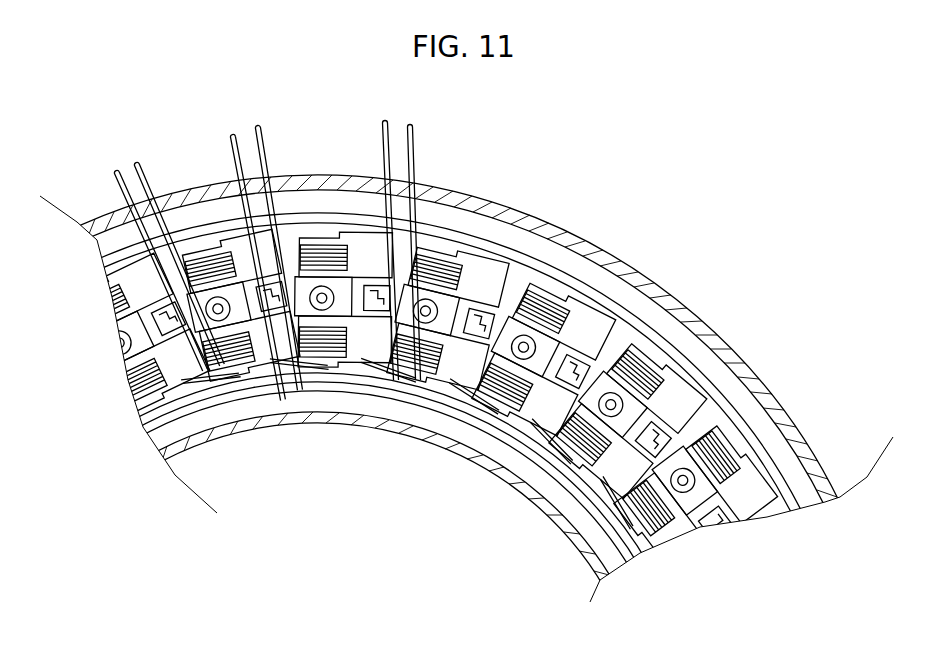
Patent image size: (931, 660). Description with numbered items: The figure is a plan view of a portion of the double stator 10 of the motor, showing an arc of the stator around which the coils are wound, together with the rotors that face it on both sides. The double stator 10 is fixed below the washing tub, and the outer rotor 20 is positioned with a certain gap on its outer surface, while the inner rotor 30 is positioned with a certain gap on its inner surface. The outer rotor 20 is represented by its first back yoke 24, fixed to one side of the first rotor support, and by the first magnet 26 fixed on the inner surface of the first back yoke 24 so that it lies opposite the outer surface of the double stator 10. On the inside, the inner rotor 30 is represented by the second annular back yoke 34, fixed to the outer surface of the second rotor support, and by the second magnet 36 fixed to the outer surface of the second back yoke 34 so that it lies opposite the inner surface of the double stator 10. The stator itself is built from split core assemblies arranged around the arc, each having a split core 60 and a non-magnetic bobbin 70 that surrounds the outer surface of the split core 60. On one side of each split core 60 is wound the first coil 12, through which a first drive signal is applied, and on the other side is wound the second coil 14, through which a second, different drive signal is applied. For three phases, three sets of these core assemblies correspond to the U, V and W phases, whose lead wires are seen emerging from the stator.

The double stator 10 is at (447, 348).
The first coil 12 is at (228, 215).
The second coil 14 is at (263, 335).
The outer rotor 20 is at (420, 346).
The first back yoke 24 is at (642, 270).
The first magnet 26 is at (573, 262).
The inner rotor 30 is at (384, 491).
The second annular back yoke 34 is at (487, 422).
The second magnet 36 is at (407, 418).
The split core 60 is at (283, 380).
The non-magnetic bobbin 70 is at (190, 396).